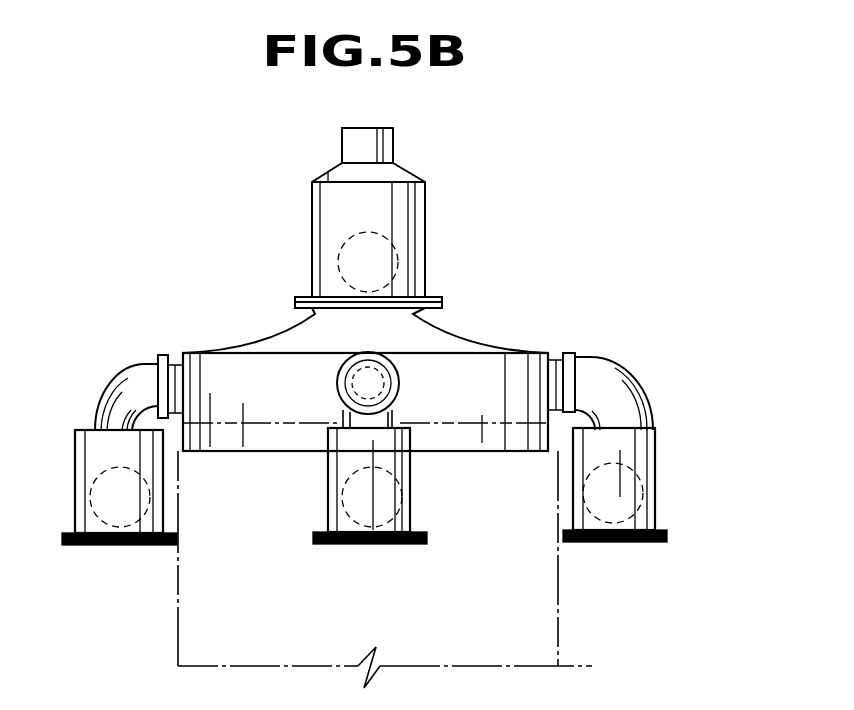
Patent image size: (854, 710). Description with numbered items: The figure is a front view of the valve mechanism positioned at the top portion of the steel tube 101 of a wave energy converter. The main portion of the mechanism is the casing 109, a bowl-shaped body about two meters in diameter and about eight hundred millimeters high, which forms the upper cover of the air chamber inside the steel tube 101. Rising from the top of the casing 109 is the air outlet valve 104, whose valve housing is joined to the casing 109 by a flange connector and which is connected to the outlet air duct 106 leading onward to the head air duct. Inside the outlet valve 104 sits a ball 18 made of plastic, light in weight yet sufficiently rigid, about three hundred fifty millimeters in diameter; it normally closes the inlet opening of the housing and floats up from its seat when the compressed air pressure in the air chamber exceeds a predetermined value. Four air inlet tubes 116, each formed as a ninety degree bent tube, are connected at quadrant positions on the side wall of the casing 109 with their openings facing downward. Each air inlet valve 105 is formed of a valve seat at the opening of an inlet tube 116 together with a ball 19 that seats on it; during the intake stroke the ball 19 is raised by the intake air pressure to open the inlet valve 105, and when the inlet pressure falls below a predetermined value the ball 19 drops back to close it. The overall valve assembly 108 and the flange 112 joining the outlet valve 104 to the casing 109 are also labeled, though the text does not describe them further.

The ball 18 is at (340, 257).
The ball 19 is at (88, 492).
The steel tube 101 is at (559, 598).
The air outlet valve 104 is at (425, 237).
The air inlet valve 105 is at (74, 451).
The outlet air duct 106 is at (353, 146).
The manifold assembly 108 is at (513, 320).
The casing 109 is at (236, 372).
The flange 112 is at (443, 303).
The air inlet tube 116 is at (117, 400).